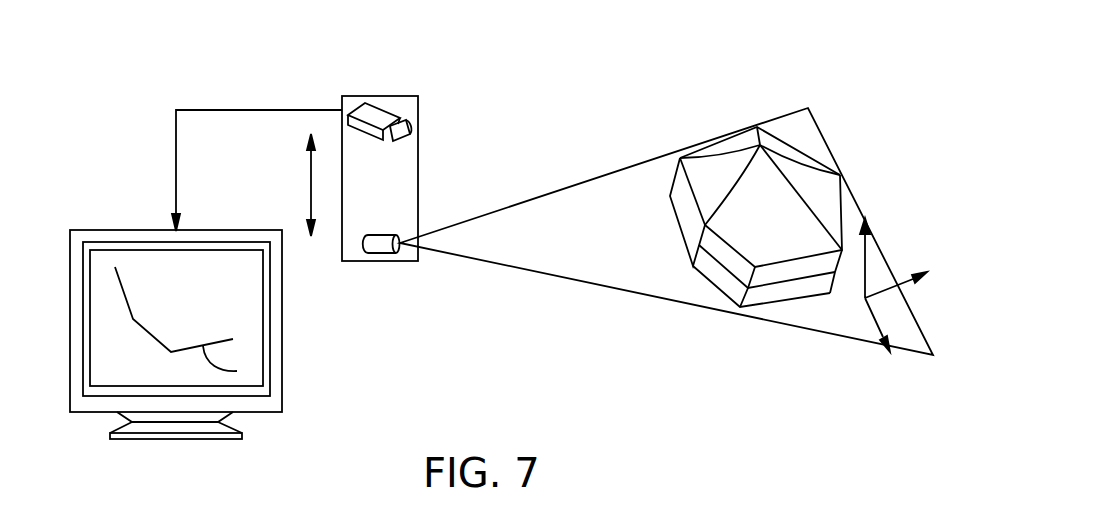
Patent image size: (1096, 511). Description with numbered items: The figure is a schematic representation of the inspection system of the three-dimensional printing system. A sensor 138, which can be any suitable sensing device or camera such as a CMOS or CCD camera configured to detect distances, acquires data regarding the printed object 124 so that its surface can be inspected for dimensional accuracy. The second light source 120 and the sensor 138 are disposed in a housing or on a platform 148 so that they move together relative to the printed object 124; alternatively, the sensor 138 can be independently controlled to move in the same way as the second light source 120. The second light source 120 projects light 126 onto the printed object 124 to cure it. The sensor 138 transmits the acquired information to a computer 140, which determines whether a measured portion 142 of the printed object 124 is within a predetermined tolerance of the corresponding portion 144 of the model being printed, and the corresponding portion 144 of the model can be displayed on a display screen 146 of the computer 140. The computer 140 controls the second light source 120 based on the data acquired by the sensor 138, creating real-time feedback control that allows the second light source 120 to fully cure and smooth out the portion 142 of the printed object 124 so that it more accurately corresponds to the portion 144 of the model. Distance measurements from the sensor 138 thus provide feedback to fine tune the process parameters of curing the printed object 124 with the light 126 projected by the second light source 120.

The second light source 120 is at (379, 253).
The printed object 124 is at (793, 302).
The light 126 is at (587, 283).
The sensor 138 is at (383, 107).
The computer 140 is at (130, 230).
The measured portion 142 is at (685, 212).
The corresponding portion of the model 144 is at (237, 371).
The display screen 146 is at (122, 356).
The platform 148 is at (418, 178).